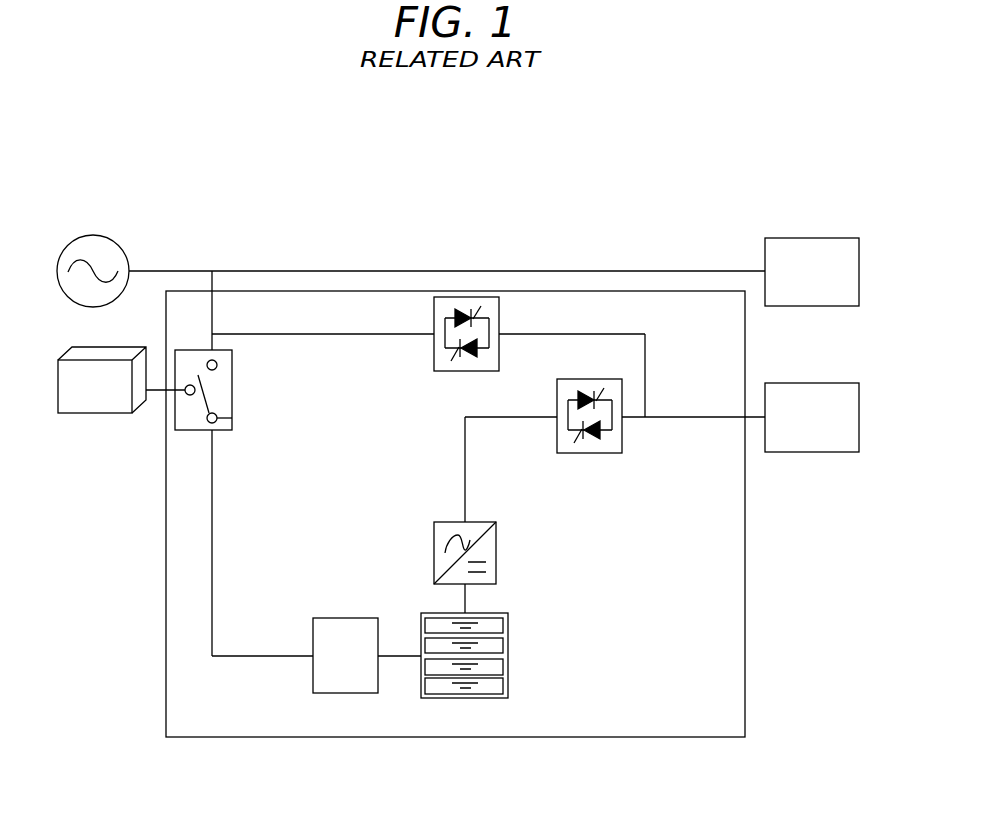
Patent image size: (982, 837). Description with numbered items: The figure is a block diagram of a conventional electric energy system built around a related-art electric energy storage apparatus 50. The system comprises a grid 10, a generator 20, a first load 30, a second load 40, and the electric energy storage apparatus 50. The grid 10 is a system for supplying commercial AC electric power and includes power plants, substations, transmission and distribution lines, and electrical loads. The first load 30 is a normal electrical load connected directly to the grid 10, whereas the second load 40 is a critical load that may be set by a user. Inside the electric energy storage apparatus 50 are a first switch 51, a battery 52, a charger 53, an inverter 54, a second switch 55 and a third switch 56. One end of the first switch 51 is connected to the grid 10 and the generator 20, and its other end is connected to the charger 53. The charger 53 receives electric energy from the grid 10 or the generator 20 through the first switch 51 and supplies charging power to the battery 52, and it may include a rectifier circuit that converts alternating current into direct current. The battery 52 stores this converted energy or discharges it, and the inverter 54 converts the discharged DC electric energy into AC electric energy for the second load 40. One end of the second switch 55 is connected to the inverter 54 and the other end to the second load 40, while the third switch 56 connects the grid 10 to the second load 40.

The grid 10 is at (93, 235).
The generator 20 is at (93, 414).
The first load 30 is at (810, 237).
The second load 40 is at (810, 453).
The electric energy storage apparatus 50 is at (630, 737).
The first switch 51 is at (232, 390).
The battery 52 is at (508, 652).
The charger 53 is at (345, 617).
The inverter 54 is at (496, 545).
The second switch 55 is at (590, 453).
The third switch 56 is at (434, 356).